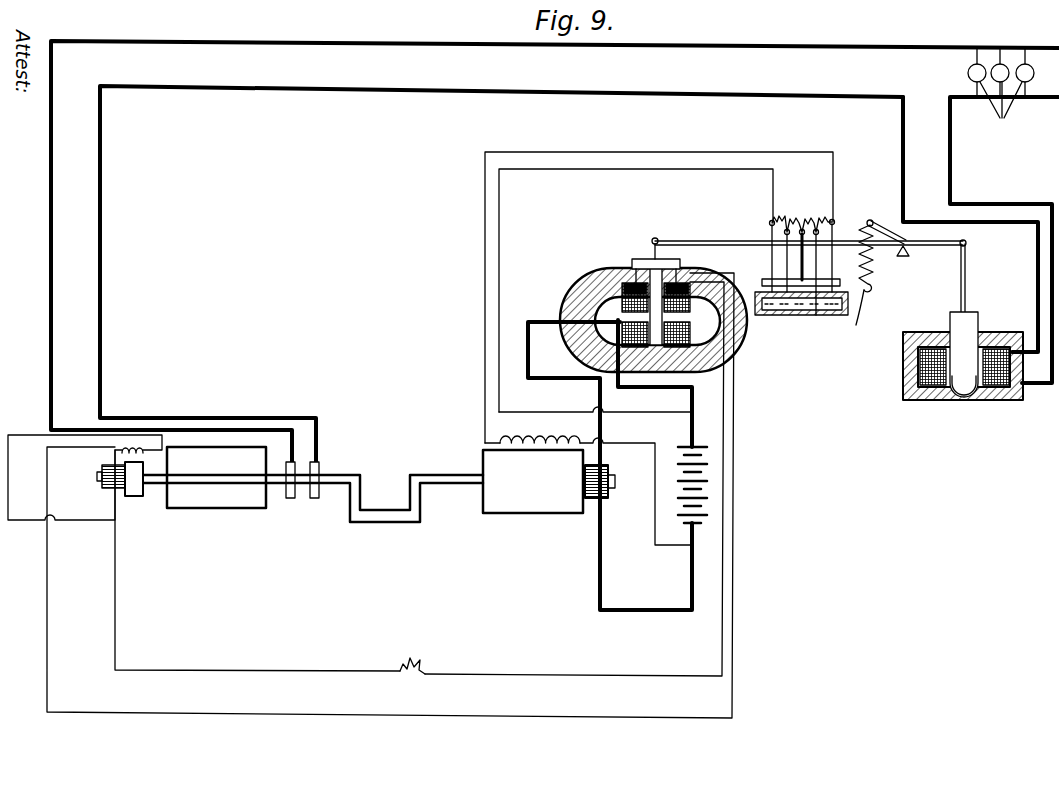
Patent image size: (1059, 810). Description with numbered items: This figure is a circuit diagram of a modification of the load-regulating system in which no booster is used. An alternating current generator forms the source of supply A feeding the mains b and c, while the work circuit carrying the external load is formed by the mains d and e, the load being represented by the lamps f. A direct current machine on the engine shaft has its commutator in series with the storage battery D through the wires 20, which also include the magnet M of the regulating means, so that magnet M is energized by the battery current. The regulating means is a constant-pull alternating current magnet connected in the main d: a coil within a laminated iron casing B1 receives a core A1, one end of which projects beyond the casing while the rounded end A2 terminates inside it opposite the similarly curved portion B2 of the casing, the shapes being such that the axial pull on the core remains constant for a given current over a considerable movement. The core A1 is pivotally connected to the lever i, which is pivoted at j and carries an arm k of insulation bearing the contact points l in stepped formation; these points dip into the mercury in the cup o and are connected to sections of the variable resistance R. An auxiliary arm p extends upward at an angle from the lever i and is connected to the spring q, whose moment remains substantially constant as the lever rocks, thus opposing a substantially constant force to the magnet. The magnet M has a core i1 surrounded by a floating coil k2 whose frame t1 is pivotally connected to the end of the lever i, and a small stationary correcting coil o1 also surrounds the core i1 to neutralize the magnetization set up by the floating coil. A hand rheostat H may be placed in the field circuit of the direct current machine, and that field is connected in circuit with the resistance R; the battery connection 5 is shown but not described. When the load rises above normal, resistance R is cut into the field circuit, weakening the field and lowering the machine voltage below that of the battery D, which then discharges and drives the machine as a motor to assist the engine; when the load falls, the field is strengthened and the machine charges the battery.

The main c is at (312, 44).
The main b is at (372, 88).
The work circuit main d is at (975, 98).
The work circuit main e is at (1002, 58).
The lamps f is at (1001, 118).
The lever i is at (728, 243).
The variable resistance R is at (802, 243).
The mercury cup o is at (772, 315).
The contact points l is at (787, 315).
The arm of insulation k is at (816, 315).
The auxiliary arm p is at (884, 222).
The spring q is at (860, 300).
The pivot j is at (903, 258).
The magnet M is at (622, 335).
The core i1 is at (693, 378).
The floating coil k2 is at (625, 286).
The stationary correcting coil o1 is at (623, 306).
The frame of the floating coil t1 is at (645, 262).
The wires 20 is at (541, 321).
The source of supply A is at (695, 447).
The storage battery D is at (705, 485).
The battery negative connection 5 is at (700, 523).
The laminated iron casing B1 is at (1013, 400).
The curved portion of casing B2 is at (985, 400).
The core A1 is at (968, 325).
The rounded end of core A2 is at (958, 388).
The hand rheostat H is at (410, 656).